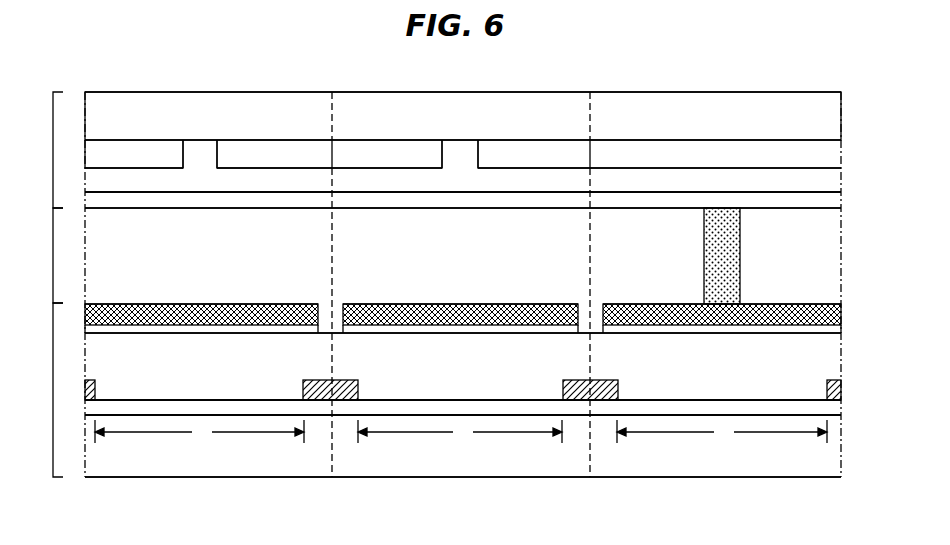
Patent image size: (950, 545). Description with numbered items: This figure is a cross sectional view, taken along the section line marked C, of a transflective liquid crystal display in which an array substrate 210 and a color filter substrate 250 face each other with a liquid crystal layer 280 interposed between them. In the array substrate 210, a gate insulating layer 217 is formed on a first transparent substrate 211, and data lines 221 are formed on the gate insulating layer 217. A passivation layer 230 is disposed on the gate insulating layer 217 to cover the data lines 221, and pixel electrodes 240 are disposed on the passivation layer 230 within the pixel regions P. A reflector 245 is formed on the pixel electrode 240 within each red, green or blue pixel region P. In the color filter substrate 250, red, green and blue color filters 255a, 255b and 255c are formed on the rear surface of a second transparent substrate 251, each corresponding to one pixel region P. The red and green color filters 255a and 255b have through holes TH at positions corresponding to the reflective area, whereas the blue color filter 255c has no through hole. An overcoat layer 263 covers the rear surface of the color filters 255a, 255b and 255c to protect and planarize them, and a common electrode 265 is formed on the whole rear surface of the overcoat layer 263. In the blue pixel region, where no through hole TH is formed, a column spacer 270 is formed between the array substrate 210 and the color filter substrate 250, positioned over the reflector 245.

The color filter substrate 250 is at (35, 150).
The liquid crystal layer 280 is at (35, 255).
The array substrate 210 is at (35, 390).
The second transparent substrate 251 is at (522, 124).
The red color filter 255a is at (140, 152).
The green color filter 255b is at (362, 152).
The blue color filter 255c is at (623, 152).
The through hole TH is at (201, 148).
The overcoat layer 263 is at (827, 180).
The common electrode 265 is at (374, 202).
The column spacer 270 is at (740, 268).
The pixel electrode 240 is at (202, 335).
The reflector 245 is at (307, 302).
The passivation layer 230 is at (830, 357).
The gate insulating layer 217 is at (830, 410).
The data line 221 is at (338, 400).
The first transparent substrate 211 is at (482, 471).
The pixel region P is at (461, 431).
The section line C- C is at (464, 495).